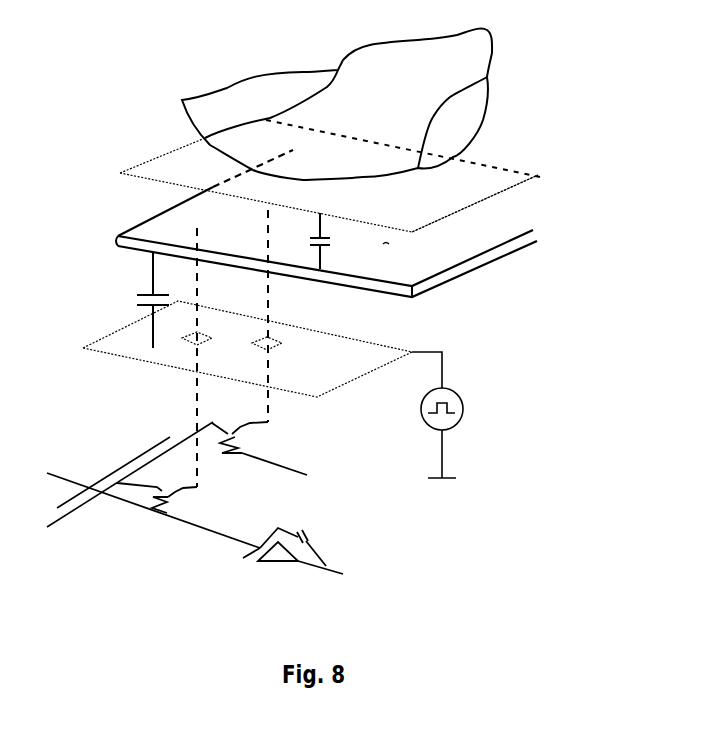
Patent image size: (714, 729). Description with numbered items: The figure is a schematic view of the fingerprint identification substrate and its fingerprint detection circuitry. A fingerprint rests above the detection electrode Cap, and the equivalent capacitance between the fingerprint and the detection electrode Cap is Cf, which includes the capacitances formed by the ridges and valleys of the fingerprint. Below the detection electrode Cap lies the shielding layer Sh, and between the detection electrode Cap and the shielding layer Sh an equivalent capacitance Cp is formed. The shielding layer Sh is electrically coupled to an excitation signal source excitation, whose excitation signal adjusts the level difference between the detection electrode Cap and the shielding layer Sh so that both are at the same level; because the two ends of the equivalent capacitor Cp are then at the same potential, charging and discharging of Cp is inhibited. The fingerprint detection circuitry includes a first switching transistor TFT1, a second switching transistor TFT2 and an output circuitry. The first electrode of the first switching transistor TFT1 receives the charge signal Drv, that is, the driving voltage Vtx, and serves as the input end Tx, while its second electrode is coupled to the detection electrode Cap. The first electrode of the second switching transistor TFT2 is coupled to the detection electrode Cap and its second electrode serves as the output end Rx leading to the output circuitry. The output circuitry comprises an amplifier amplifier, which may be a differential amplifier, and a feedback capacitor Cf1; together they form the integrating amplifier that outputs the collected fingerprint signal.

The element fingerprint is at (337, 104).
The detection electrode Cap is at (300, 242).
The equivalent capacitance between the fingerprint and the detection electrode Cf is at (349, 241).
The equivalent capacitance between the detection electrode and the shielding layer Cp is at (133, 300).
The shielding layer Sh is at (230, 349).
The excitation signal source excitation is at (502, 415).
The first switching transistor TFT1 is at (257, 439).
The second switching transistor TFT2 is at (181, 498).
The input end of the fingerprint detection circuitry Tx is at (288, 473).
The output end of the fingerprint detection circuitry Rx is at (153, 515).
The feedback capacitor Cf1 is at (308, 547).
The element amplifier is at (277, 572).